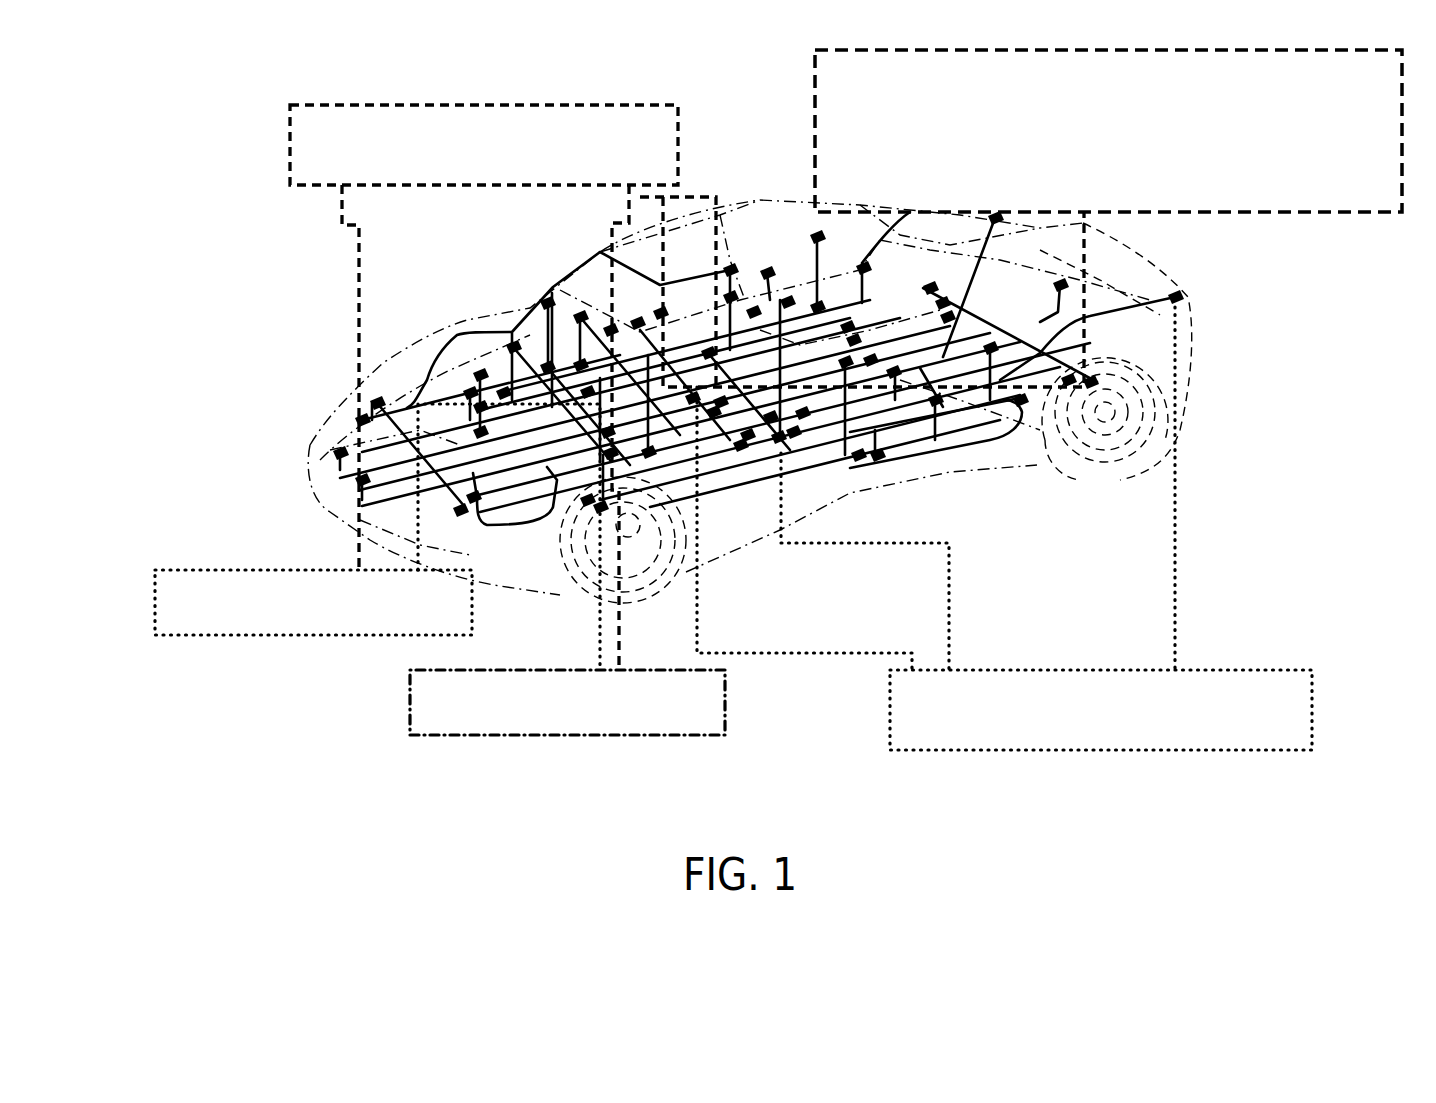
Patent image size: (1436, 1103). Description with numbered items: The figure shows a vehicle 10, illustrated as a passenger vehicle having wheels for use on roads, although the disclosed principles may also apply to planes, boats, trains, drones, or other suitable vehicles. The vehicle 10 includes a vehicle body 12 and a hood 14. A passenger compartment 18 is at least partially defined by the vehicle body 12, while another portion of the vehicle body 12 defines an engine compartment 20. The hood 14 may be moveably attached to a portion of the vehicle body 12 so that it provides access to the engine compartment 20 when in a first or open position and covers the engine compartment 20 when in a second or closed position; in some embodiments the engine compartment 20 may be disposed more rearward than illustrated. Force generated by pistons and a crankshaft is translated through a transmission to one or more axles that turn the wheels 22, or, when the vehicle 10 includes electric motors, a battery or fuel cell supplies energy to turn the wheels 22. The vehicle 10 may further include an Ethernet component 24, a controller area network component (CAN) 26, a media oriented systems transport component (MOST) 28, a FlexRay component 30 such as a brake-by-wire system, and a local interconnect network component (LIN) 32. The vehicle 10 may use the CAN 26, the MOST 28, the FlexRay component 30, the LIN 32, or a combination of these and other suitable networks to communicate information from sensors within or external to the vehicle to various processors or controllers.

The vehicle 10 is at (90, 197).
The vehicle body 12 is at (838, 375).
The hood 14 is at (445, 335).
The passenger compartment 18 is at (622, 280).
The engine compartment 20 is at (288, 406).
The wheels 22 is at (572, 564).
The Ethernet component 24 is at (118, 604).
The controller area network component (CAN) 26 is at (256, 139).
The media oriented systems transport component (MOST) 28 is at (798, 113).
The FlexRay component 30 is at (370, 699).
The local interconnect network component (LIN) 32 is at (860, 699).